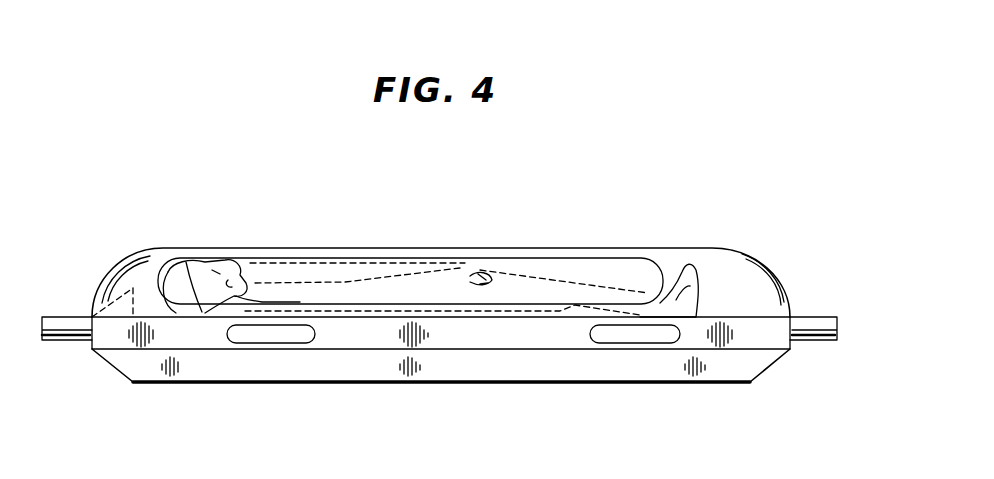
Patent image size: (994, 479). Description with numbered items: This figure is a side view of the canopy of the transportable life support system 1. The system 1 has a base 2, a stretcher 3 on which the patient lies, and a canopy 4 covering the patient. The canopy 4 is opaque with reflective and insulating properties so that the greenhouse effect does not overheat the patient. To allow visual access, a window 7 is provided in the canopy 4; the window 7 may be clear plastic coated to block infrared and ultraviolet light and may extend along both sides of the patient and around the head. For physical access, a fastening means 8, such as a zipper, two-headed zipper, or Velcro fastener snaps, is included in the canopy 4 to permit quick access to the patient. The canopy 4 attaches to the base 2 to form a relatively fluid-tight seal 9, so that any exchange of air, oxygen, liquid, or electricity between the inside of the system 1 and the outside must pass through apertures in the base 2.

The transportable life support system 1 is at (582, 188).
The base 2 is at (773, 363).
The stretcher 3 is at (840, 324).
The canopy 4 is at (687, 248).
The window 7 is at (118, 272).
The fastening means 8 is at (758, 317).
The fluid-tight seal 9 is at (585, 350).